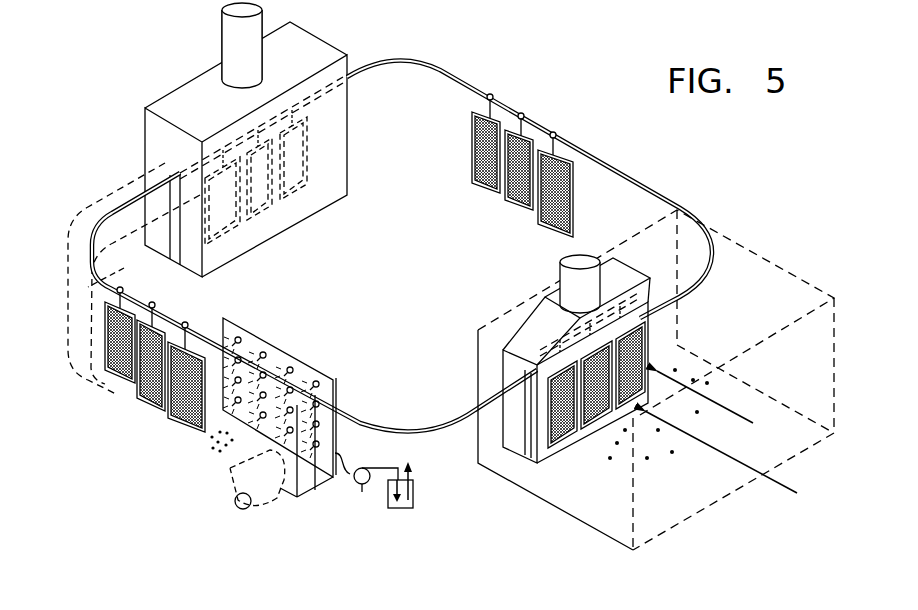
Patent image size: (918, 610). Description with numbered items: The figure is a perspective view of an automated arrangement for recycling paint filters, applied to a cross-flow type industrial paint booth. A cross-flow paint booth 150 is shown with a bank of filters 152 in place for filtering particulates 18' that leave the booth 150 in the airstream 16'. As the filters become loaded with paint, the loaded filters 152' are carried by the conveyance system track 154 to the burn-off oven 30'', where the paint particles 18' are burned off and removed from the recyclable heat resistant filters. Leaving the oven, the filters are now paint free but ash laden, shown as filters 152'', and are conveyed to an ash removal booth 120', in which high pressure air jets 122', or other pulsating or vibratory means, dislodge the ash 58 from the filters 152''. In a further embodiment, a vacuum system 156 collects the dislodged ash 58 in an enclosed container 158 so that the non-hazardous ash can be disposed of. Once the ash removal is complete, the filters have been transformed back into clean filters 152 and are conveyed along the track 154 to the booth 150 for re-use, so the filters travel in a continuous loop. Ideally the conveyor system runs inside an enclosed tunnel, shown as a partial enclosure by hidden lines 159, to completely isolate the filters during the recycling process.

The burn-off oven 30'' is at (263, 140).
The hidden lines indicating partial enclosure 159 is at (108, 196).
The conveyance system track 154 is at (653, 194).
The loaded filters 152' is at (389, 174).
The paint free filters (ash laden) 152'' is at (126, 359).
The ash 58 is at (210, 442).
The high pressure air jets 122' is at (303, 397).
The ash removal booth 120' is at (294, 474).
The vacuum system 156 is at (360, 490).
The enclosed container 158 is at (401, 510).
The cross-flow paint booth 150 is at (806, 282).
The filters 152 is at (612, 380).
The airstream 16' is at (723, 449).
The particulates 18' is at (671, 417).